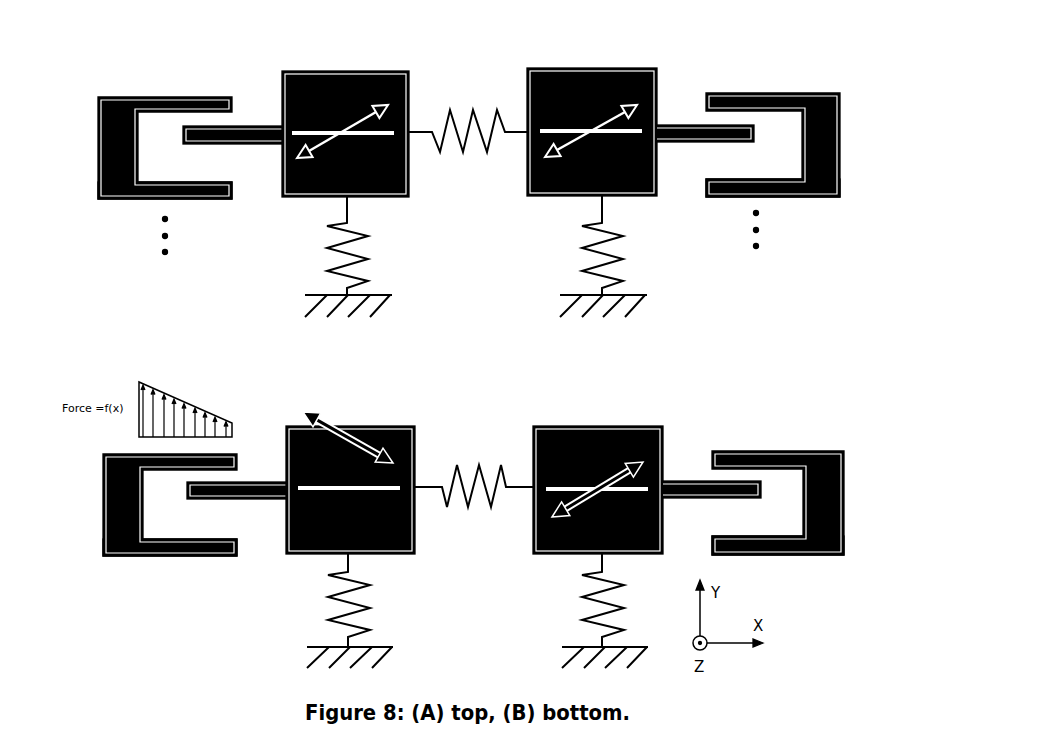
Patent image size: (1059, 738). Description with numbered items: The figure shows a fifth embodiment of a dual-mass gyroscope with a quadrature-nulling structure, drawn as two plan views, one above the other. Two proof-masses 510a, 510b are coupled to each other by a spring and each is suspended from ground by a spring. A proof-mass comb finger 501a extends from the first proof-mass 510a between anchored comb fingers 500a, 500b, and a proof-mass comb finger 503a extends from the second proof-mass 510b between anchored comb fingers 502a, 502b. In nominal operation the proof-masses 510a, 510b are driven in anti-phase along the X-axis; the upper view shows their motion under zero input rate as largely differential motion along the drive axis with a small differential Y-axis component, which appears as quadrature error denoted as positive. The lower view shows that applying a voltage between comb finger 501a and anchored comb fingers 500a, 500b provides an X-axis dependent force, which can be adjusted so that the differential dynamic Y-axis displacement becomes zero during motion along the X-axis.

In FIG. 8A, the anchored comb finger 500a is at (133, 98).
In FIG. 8B, the anchored comb finger 500a is at (173, 465).
In FIG. 8A, the anchored comb finger 500b is at (138, 163).
In FIG. 8B, the anchored comb finger 500b is at (192, 547).
In FIG. 8A, the proof-mass comb finger 501a is at (257, 133).
In FIG. 8B, the proof-mass comb finger 501a is at (263, 492).
In FIG. 8A, the proof-mass 510a is at (358, 82).
In FIG. 8B, the proof-mass 510a is at (388, 432).
In FIG. 8A, the proof-mass 510b is at (614, 82).
In FIG. 8B, the proof-mass 510b is at (597, 440).
In FIG. 8A, the proof-mass comb finger 503a is at (677, 128).
In FIG. 8B, the proof-mass comb finger 503a is at (693, 485).
In FIG. 8A, the anchored comb finger 502a is at (812, 98).
In FIG. 8B, the anchored comb finger 502a is at (753, 457).
In FIG. 8A, the anchored comb finger 502b is at (810, 160).
In FIG. 8B, the anchored comb finger 502b is at (763, 543).